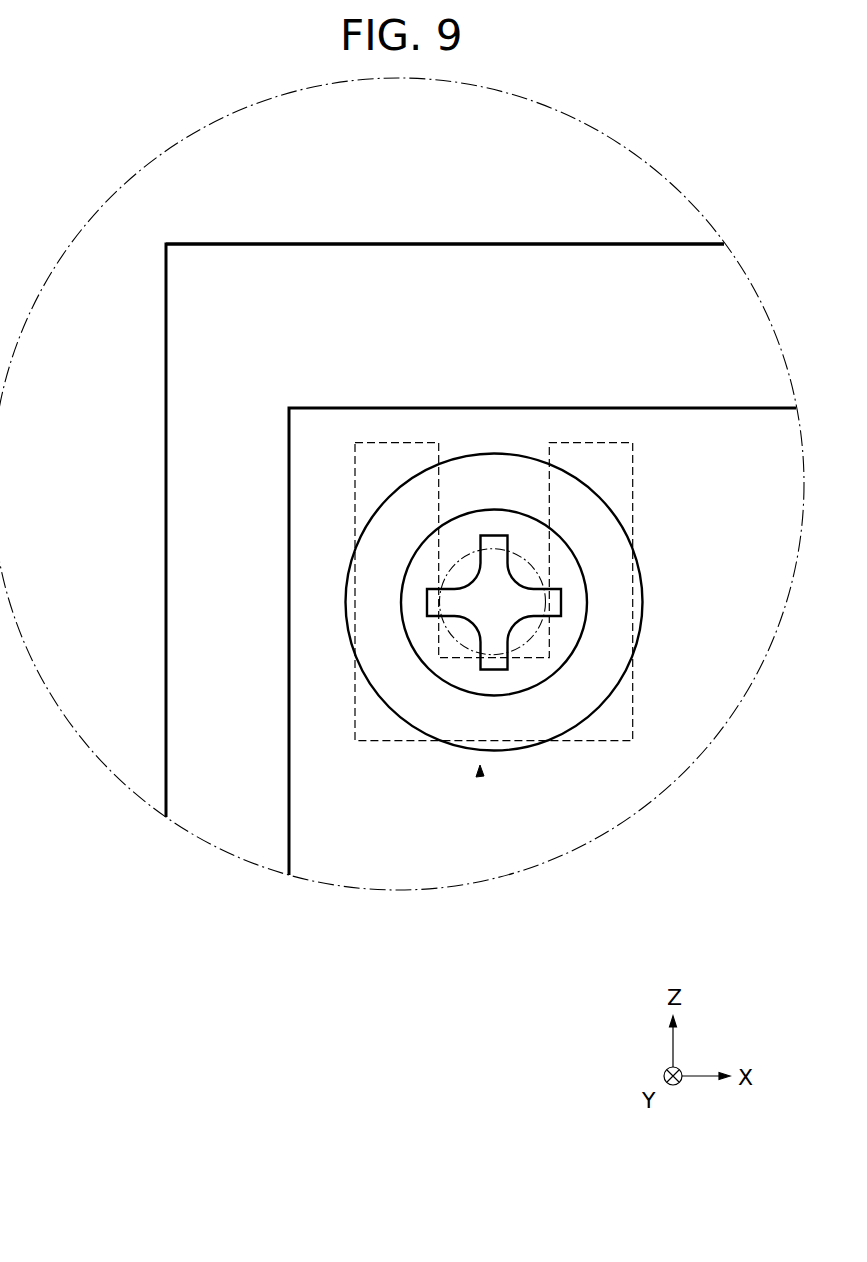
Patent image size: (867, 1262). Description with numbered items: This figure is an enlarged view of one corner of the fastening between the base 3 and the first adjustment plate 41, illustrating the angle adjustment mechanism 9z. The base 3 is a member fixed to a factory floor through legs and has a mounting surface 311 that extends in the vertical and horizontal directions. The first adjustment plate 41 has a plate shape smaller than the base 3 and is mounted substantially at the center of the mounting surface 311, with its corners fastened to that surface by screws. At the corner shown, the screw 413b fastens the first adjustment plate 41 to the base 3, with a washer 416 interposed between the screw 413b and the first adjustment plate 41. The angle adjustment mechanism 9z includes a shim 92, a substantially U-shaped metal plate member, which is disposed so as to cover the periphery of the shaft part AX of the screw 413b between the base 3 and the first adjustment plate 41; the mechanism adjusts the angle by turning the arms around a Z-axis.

The base 3 is at (485, 244).
The mounting surface 311 is at (300, 275).
The first adjustment plate 41 is at (621, 408).
The shim 92 is at (635, 502).
The washer 416 is at (604, 702).
The screw 413b is at (587, 610).
The shaft part AX is at (525, 558).
The angle adjustment mechanism 9z is at (480, 768).